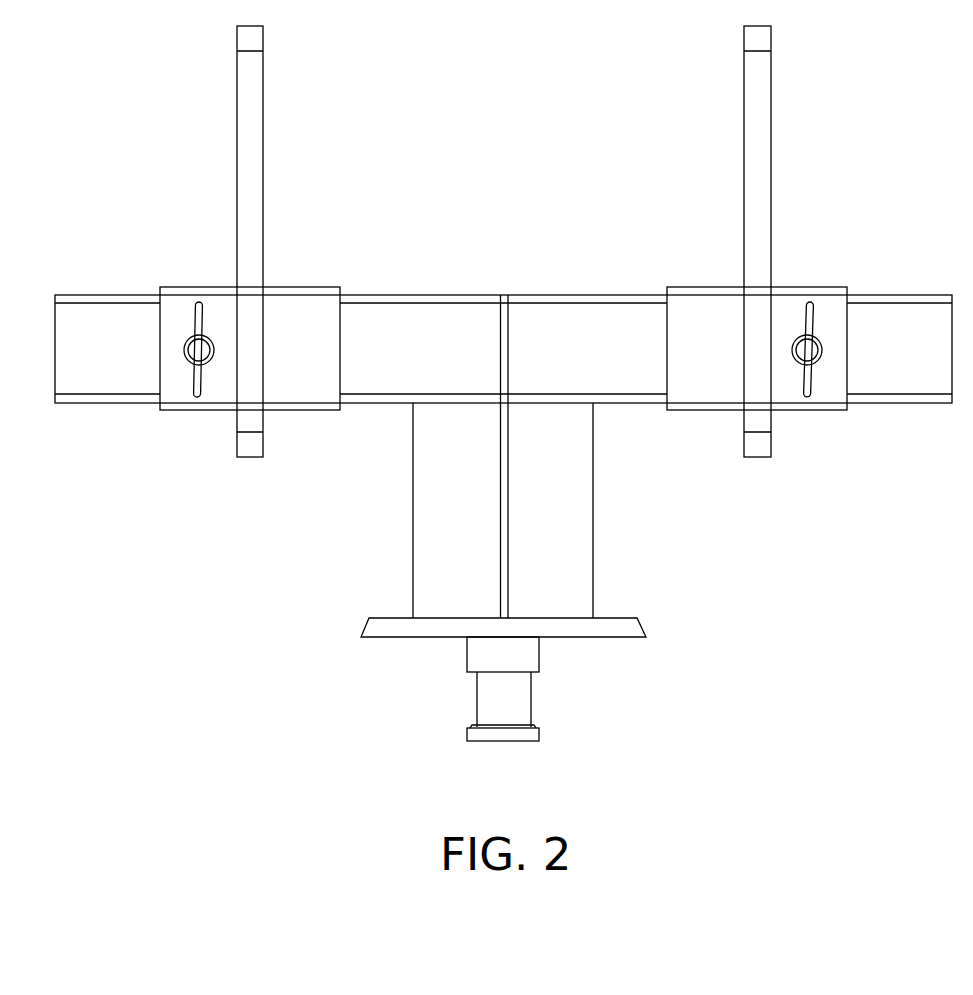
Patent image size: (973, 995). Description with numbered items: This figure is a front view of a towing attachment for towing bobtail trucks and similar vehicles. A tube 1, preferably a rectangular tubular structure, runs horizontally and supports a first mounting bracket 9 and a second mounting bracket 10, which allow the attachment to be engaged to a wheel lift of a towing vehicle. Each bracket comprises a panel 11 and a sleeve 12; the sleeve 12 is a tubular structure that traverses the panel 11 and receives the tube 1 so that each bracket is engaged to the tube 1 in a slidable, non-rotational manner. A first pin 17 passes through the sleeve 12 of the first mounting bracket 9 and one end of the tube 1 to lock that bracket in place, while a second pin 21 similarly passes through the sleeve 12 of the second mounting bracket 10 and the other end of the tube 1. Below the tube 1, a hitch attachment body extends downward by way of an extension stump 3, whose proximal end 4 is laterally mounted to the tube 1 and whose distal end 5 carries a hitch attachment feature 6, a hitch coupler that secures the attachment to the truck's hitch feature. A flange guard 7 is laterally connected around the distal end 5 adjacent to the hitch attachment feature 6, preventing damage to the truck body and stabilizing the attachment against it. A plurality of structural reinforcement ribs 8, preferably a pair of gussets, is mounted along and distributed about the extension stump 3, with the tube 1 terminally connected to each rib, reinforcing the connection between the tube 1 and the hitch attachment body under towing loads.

The tube 1 is at (588, 312).
The extension stump 3 is at (423, 503).
The proximal end 4 is at (460, 456).
The distal end 5 is at (481, 637).
The hitch attachment feature 6 is at (482, 684).
The flange guard 7 is at (367, 625).
The plurality of structural reinforcement ribs 8 is at (503, 508).
The first mounting bracket 9 is at (245, 159).
The second mounting bracket 10 is at (765, 163).
The panel 11 is at (518, 241).
The sleeve 12 is at (290, 302).
The first pin 17 is at (183, 352).
The second pin 21 is at (821, 356).